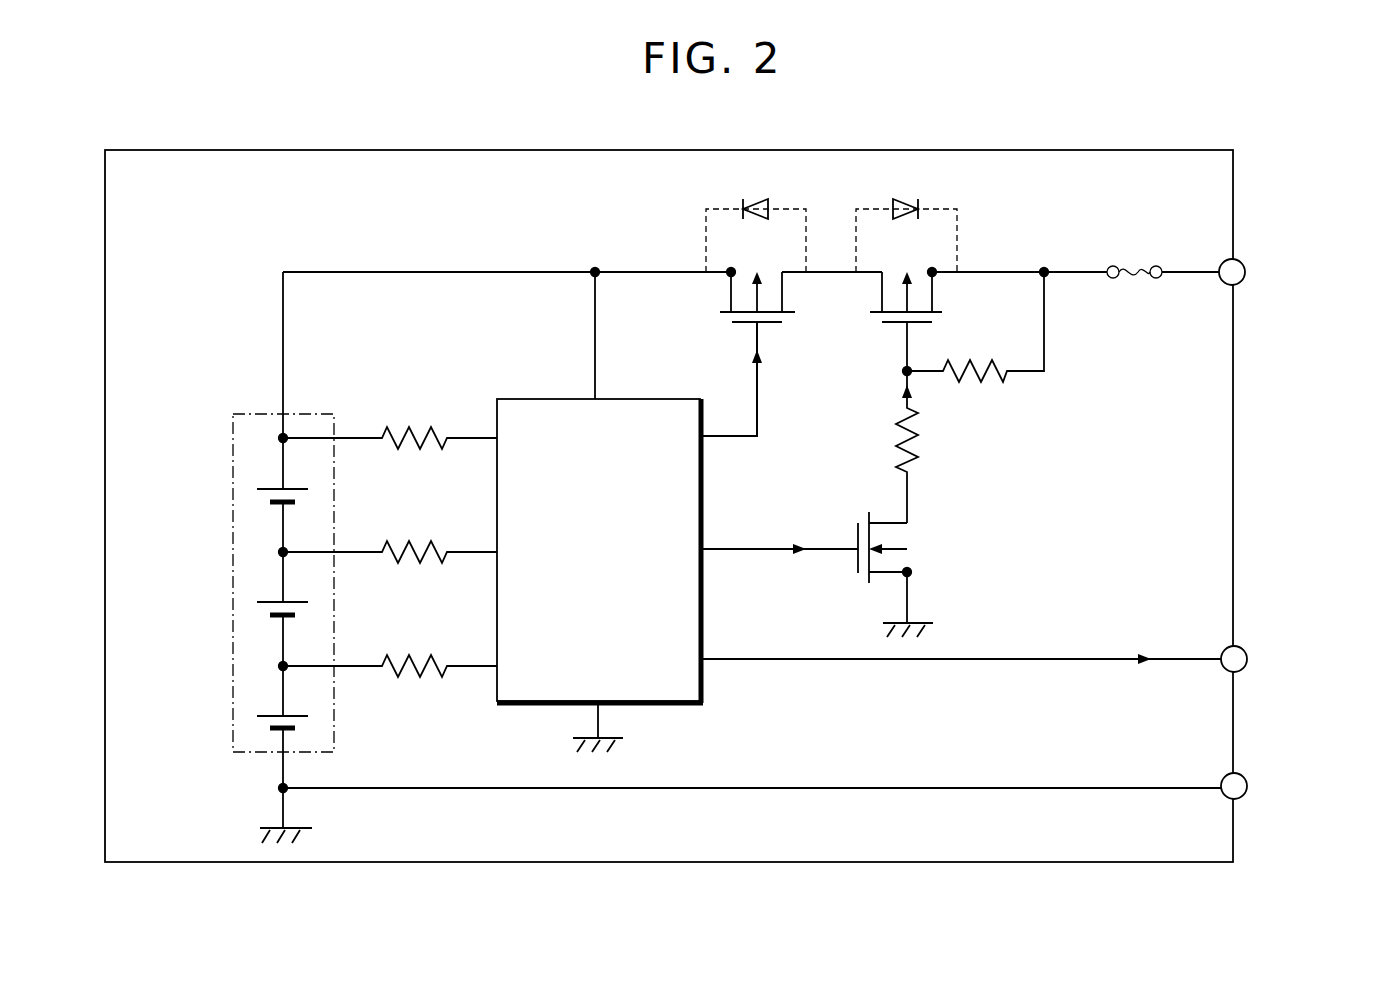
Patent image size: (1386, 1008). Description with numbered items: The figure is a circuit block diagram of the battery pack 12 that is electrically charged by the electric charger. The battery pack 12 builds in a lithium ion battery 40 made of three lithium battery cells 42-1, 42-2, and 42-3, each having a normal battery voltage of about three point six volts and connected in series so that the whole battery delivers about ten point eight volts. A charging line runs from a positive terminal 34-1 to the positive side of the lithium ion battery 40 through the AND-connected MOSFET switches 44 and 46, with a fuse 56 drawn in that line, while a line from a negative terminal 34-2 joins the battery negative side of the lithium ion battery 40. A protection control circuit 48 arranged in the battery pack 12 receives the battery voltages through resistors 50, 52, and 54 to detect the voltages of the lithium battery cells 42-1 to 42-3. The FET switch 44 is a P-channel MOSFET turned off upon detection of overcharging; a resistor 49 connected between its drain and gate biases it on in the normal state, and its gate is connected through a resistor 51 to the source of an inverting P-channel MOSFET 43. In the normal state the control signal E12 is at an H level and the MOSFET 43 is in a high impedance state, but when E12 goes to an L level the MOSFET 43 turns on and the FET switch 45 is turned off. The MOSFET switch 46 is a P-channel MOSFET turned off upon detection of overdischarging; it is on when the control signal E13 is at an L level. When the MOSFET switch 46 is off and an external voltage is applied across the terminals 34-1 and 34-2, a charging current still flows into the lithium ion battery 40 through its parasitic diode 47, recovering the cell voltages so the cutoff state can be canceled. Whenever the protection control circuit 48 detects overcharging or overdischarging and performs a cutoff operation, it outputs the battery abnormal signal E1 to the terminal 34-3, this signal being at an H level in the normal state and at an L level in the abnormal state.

The battery pack 12 is at (282, 150).
The lithium ion battery 40 is at (233, 436).
The lithium battery cell 42-1 is at (265, 500).
The lithium battery cell 42-2 is at (265, 614).
The lithium battery cell 42-3 is at (265, 728).
The resistor 50 is at (410, 428).
The resistor 52 is at (410, 542).
The resistor 54 is at (410, 656).
The protection control circuit 48 is at (518, 399).
The MOSFET switch 46 is at (757, 276).
The FET switch 44 is at (907, 276).
The parasitic diode 47 is at (760, 207).
The FET switch 45 is at (903, 207).
The resistor 49 is at (975, 374).
The resistor 51 is at (903, 438).
The inverting P-channel MOSFET 43 is at (909, 548).
The fuse 56 is at (1134, 278).
The positive terminal 34-1 is at (1246, 270).
The negative terminal 34-2 is at (1248, 785).
The terminal 34-3 is at (1248, 659).
The control signal E13 is at (759, 366).
The control signal E12 is at (790, 548).
The battery abnormal signal E1 is at (1122, 657).